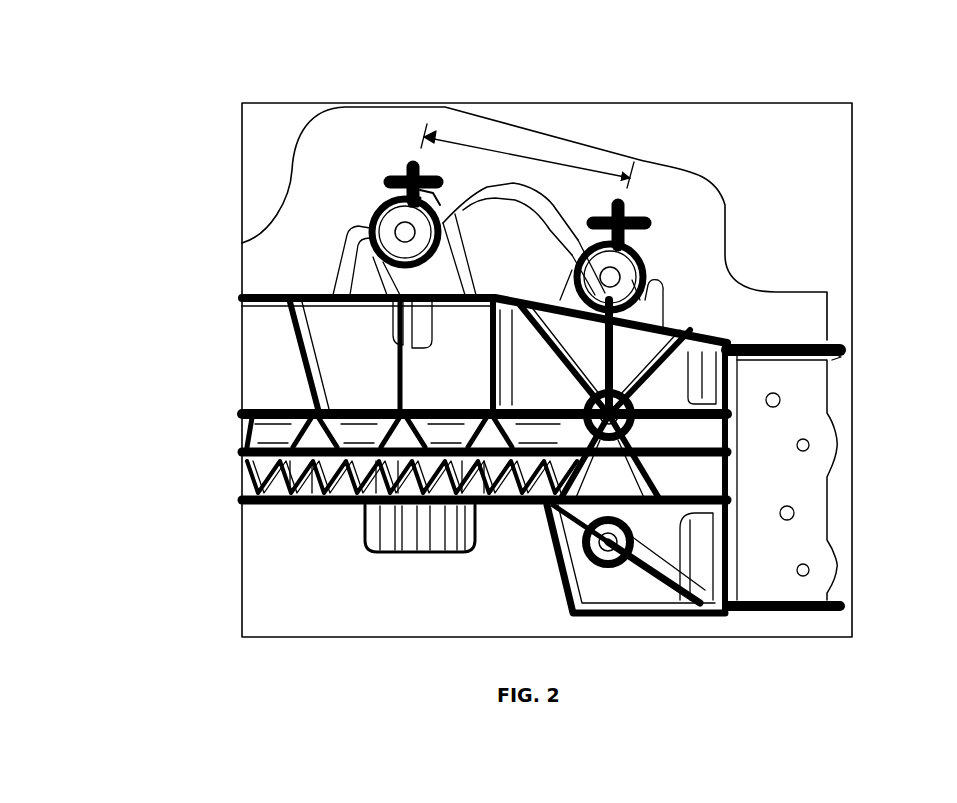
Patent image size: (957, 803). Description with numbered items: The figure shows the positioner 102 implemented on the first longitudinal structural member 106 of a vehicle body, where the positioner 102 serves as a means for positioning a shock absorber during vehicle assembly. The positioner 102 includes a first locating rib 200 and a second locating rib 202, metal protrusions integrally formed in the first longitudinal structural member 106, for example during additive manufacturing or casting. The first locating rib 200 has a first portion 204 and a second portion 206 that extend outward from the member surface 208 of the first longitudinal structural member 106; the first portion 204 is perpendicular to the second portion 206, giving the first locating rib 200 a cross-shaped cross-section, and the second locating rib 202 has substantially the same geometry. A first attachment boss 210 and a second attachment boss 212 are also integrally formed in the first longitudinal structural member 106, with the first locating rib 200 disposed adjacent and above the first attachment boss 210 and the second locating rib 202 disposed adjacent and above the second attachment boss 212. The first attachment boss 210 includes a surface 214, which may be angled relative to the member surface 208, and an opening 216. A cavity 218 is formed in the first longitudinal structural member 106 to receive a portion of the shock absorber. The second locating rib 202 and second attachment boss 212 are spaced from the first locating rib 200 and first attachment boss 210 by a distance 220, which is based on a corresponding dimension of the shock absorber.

The positioner 102 is at (612, 78).
The first longitudinal structural member 106 is at (830, 307).
The first locating rib 200 is at (378, 180).
The second locating rib 202 is at (653, 223).
The first portion 204 is at (408, 167).
The second portion 206 is at (433, 193).
The member surface 208 is at (327, 132).
The first attachment boss 210 is at (363, 213).
The second attachment boss 212 is at (658, 263).
The surface 214 is at (383, 227).
The opening 216 is at (397, 238).
The cavity 218 is at (515, 170).
The distance 220 is at (597, 170).